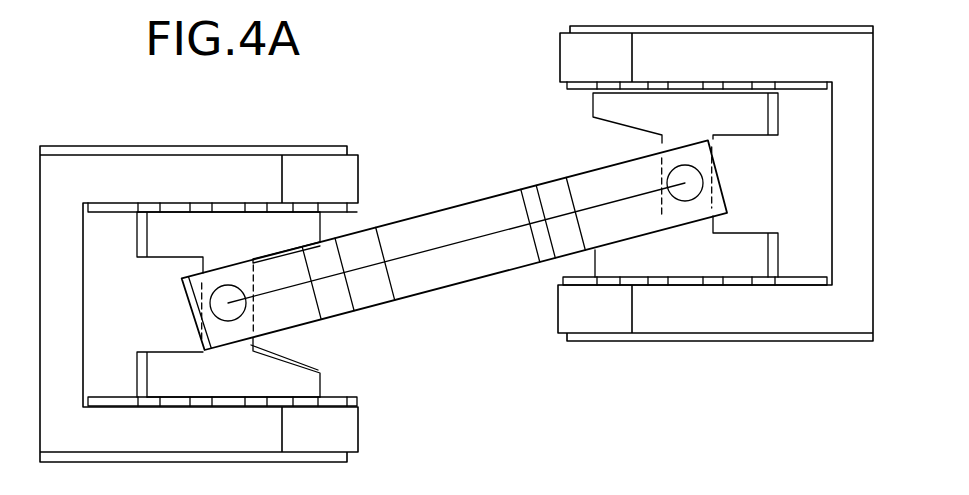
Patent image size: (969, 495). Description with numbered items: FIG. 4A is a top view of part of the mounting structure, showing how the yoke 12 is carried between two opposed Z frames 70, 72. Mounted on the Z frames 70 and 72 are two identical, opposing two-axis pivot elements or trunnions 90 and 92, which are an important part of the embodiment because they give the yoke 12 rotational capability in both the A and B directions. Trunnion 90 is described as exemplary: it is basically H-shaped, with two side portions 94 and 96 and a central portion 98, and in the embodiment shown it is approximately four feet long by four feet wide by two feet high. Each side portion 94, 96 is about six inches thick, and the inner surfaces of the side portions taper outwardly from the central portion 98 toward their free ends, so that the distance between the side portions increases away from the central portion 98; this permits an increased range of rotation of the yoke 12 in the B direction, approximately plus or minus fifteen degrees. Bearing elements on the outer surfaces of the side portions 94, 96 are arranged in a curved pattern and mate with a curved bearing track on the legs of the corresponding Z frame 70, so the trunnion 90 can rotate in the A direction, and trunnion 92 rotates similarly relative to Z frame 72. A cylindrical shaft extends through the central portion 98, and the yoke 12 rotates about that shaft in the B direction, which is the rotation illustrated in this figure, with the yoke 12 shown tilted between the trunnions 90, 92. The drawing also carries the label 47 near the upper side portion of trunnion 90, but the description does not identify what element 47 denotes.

The yoke 12 is at (481, 192).
The pole face 47 is at (325, 227).
The Z frame 70 is at (236, 146).
The Z frame 72 is at (557, 49).
The two-axis pivot element or trunnion 90 is at (165, 258).
The two-axis pivot element or trunnion 92 is at (761, 226).
The side portion 94 is at (257, 228).
The side portion 96 is at (228, 377).
The central portion 98 is at (256, 342).